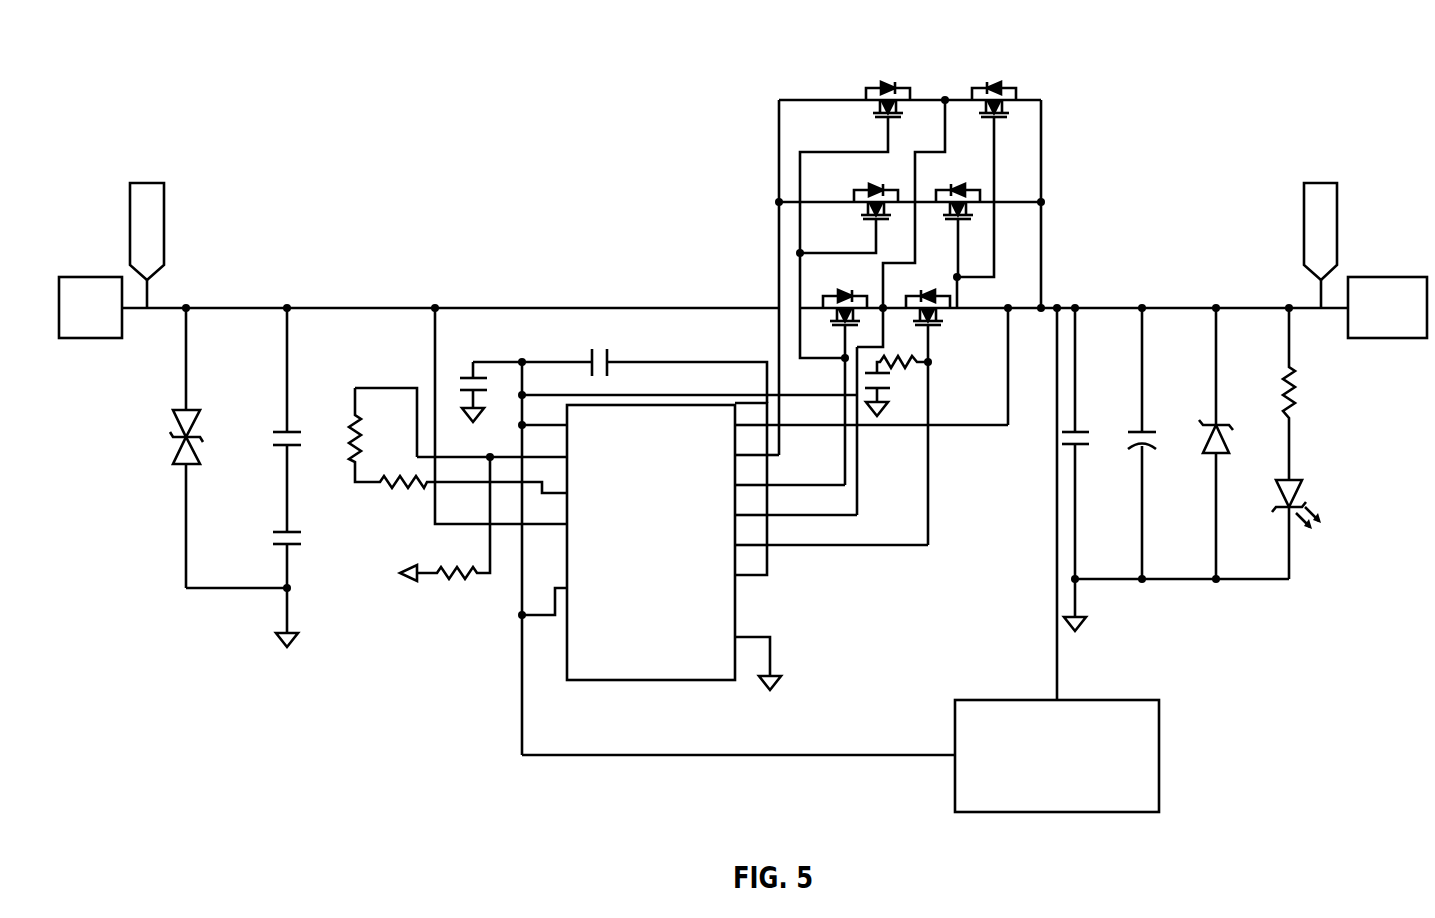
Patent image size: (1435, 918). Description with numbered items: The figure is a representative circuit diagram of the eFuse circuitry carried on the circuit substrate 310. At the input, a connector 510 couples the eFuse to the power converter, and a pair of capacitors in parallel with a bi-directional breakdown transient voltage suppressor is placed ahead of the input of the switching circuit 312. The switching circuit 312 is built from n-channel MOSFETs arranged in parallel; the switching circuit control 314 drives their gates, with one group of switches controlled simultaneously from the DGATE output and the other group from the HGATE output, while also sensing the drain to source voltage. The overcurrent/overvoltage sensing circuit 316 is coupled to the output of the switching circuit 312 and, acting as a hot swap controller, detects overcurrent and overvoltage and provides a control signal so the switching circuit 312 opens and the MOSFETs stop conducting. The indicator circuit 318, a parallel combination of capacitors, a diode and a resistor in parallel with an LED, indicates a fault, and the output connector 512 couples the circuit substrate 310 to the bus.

The circuit substrate 310 is at (194, 74).
The switching circuit 312 is at (776, 36).
The switching circuit control 314 is at (573, 770).
The overcurrent/overvoltage sensing circuit 316 is at (955, 778).
The indicator circuit 318 is at (1293, 598).
The connector 510 is at (90, 340).
The output connector 512 is at (1385, 340).